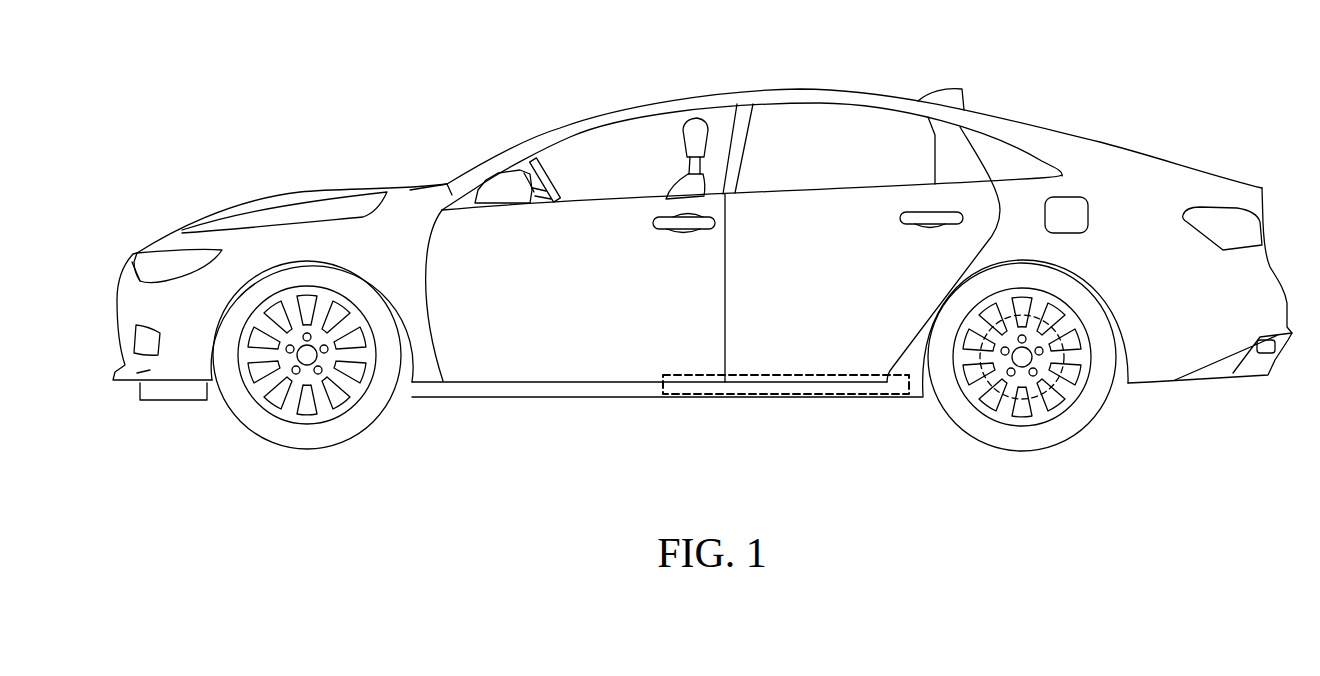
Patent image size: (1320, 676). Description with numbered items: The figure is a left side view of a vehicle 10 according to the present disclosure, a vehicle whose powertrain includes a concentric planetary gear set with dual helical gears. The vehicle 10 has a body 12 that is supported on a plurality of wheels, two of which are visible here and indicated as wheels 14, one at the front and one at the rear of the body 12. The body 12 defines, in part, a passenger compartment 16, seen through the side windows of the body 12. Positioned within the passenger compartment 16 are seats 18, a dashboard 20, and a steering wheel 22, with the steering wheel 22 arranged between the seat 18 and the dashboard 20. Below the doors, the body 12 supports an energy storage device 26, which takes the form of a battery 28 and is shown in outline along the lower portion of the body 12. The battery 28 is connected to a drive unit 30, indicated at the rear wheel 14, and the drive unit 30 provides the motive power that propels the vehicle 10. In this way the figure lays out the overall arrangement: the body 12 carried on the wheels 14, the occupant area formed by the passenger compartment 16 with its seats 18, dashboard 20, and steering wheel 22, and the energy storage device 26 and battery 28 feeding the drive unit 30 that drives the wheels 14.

The vehicle 10 is at (373, 96).
The body 12 is at (403, 190).
The wheels 14 is at (352, 423).
The passenger compartment 16 is at (597, 174).
The seats 18 is at (673, 188).
The dashboard 20 is at (513, 167).
The steering wheel 22 is at (547, 147).
The energy storage device 26 is at (822, 393).
The battery 28 is at (737, 396).
The drive unit 30 is at (1050, 390).